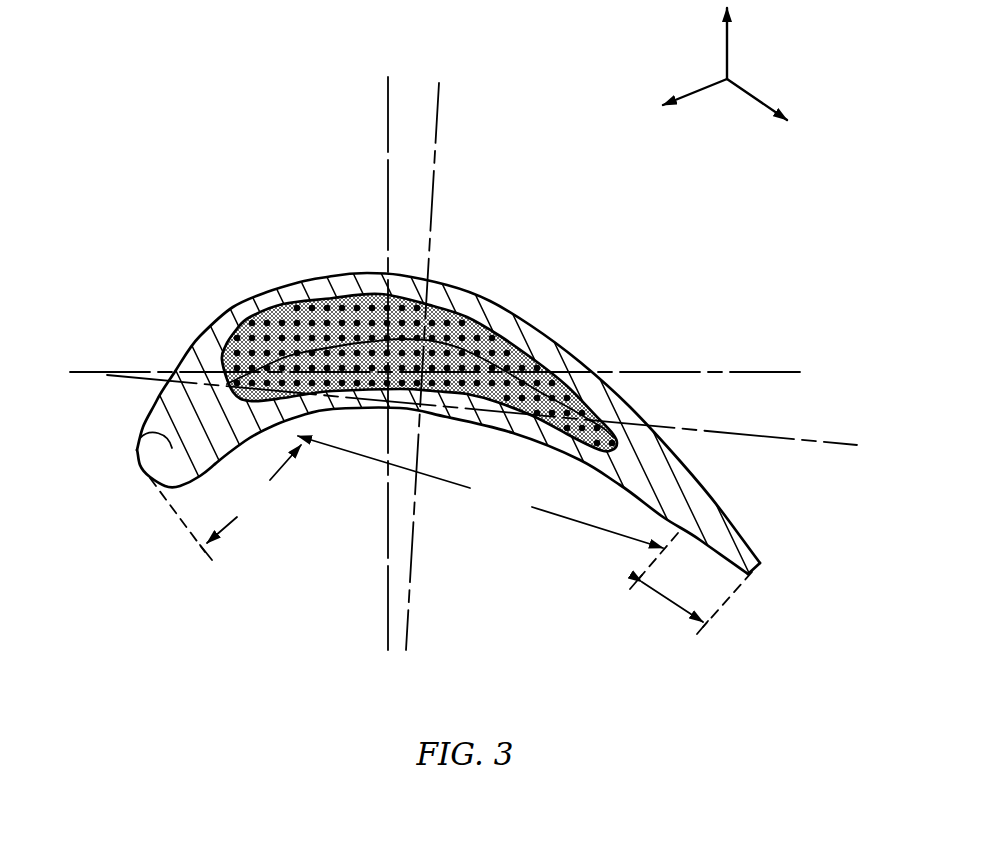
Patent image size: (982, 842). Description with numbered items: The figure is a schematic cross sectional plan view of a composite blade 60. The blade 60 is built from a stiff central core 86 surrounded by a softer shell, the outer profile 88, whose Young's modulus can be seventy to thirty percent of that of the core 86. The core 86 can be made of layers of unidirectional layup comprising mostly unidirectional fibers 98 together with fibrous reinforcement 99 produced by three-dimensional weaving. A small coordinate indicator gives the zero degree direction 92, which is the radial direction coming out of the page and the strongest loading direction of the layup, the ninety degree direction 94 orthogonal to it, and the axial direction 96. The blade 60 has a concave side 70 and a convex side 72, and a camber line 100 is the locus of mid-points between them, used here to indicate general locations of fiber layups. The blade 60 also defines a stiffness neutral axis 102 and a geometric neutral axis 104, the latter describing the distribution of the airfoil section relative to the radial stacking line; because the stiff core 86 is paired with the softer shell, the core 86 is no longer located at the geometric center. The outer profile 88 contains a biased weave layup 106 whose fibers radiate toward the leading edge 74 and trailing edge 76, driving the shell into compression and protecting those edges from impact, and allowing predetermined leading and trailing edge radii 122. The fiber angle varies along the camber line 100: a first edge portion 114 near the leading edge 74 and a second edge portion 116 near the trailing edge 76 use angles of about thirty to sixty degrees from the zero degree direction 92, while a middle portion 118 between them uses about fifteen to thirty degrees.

The composite blade 60 is at (178, 158).
The concave side 70 is at (487, 395).
The convex side 72 is at (352, 258).
The leading edge 74 is at (133, 473).
The trailing edge 76 is at (770, 574).
The central core 86 is at (419, 331).
The outer profile 88 is at (207, 352).
The zero degree direction 92 is at (695, 92).
The ninety degree direction 94 is at (728, 47).
The axial direction 96 is at (755, 100).
The unidirectional fibers 98 is at (289, 314).
The fibrous reinforcement 99 is at (468, 325).
The camber line 100 is at (143, 434).
The stiffness neutral axis 102 is at (388, 84).
The geometric neutral axis 104 is at (439, 93).
The biased weave layup 106 is at (668, 478).
The first edge portion 114 is at (225, 502).
The second edge portion 116 is at (670, 606).
The middle portion 118 is at (480, 492).
The leading edge and trailing edge radii 122 is at (151, 508).